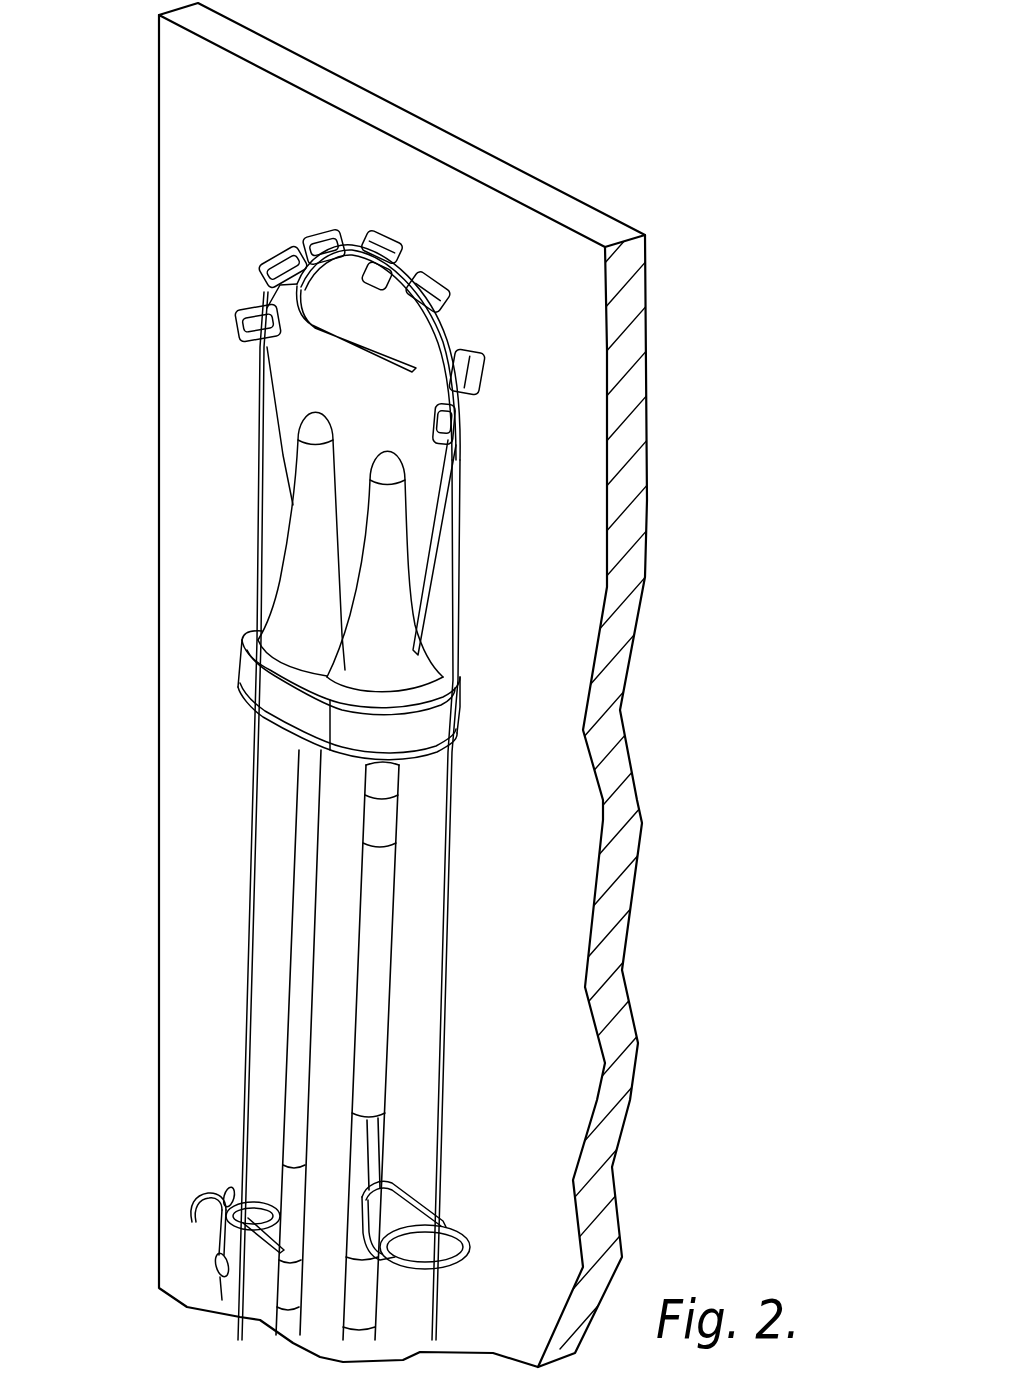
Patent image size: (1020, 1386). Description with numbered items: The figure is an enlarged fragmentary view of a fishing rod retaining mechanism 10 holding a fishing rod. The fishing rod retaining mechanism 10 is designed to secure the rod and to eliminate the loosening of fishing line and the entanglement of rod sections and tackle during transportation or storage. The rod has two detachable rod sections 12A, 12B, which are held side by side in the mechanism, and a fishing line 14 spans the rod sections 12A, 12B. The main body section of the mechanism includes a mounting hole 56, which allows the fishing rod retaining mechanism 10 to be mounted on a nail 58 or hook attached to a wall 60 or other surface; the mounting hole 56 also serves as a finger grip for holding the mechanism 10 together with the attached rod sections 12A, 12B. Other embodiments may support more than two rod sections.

The fishing rod retaining mechanism 10 is at (412, 389).
The rod section 12A is at (375, 950).
The rod section 12B is at (303, 932).
The fishing line 14 is at (262, 462).
The mounting hole 56 is at (350, 322).
The nail 58 is at (346, 262).
The wall 60 is at (282, 161).